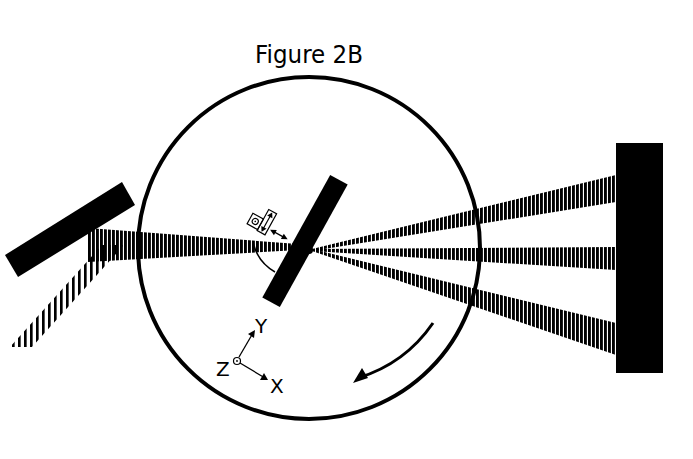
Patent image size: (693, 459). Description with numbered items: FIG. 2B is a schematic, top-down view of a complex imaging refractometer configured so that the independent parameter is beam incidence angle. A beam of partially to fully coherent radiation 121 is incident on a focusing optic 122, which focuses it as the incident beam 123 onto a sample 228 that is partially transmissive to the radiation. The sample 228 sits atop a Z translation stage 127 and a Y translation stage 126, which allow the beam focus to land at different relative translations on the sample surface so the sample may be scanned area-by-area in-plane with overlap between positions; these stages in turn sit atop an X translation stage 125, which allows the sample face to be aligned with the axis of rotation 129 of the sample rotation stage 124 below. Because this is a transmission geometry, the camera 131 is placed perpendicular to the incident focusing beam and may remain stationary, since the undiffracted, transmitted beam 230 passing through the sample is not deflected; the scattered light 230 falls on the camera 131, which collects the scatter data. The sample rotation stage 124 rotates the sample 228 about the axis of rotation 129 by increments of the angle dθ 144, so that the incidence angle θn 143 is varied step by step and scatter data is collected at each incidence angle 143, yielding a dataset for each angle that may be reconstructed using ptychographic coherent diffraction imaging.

The beam of partially to fully coherent radiation 121 is at (67, 301).
The focusing optic 122 is at (70, 229).
The incident beam 123 is at (193, 256).
The sample rotation stage 124 is at (309, 248).
The X translation stage 125 is at (313, 178).
The Y translation stage 126 is at (293, 169).
The Z translation stage 127 is at (280, 157).
The axis of rotation 129 is at (314, 261).
The camera 131 is at (639, 245).
The incidence angle 143 is at (241, 280).
The angle dθ 144 is at (370, 365).
The sample 228 is at (315, 247).
The transmitted beam 230 is at (464, 265).